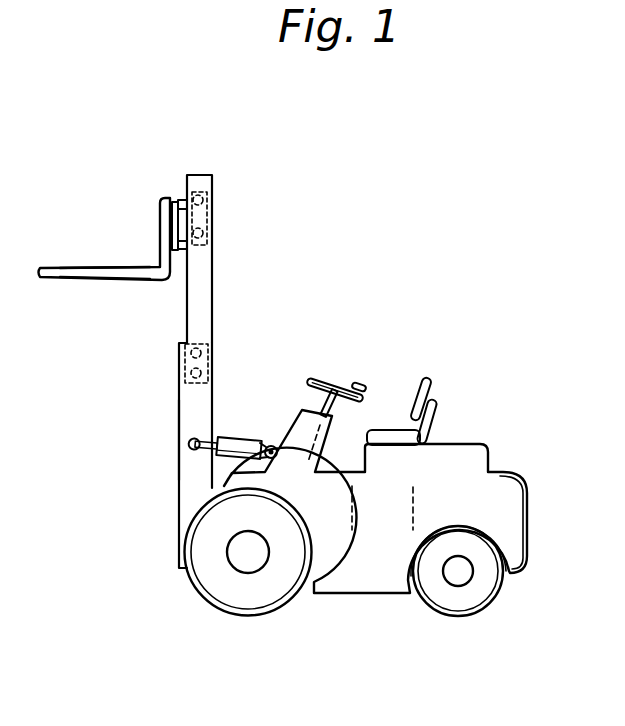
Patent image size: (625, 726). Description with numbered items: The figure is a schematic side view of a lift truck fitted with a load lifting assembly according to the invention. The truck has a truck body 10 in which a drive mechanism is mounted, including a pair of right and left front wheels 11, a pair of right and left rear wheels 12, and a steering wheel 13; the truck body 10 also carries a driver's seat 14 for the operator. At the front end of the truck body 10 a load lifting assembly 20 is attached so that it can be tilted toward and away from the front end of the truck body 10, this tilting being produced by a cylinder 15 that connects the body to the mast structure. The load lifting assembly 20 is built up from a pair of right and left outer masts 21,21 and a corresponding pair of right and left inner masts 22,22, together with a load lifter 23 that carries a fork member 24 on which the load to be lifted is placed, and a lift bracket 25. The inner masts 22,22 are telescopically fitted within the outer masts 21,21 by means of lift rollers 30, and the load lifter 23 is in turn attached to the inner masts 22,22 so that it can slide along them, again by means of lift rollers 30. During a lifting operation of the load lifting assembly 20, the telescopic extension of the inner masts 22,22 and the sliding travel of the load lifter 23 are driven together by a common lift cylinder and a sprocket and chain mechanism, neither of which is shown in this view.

The truck body 10 is at (365, 597).
The front wheels 11 is at (243, 614).
The rear wheels 12 is at (468, 617).
The steering wheel 13 is at (336, 382).
The driver's seat 14 is at (380, 433).
The cylinder 15 is at (243, 438).
The load lifting assembly 20 is at (213, 338).
The outer masts 21 is at (192, 408).
The inner masts 22 is at (200, 301).
The load lifter 23 is at (157, 233).
The fork member 24 is at (83, 268).
The lift bracket 25 is at (180, 202).
The lift rollers 30 is at (212, 208).